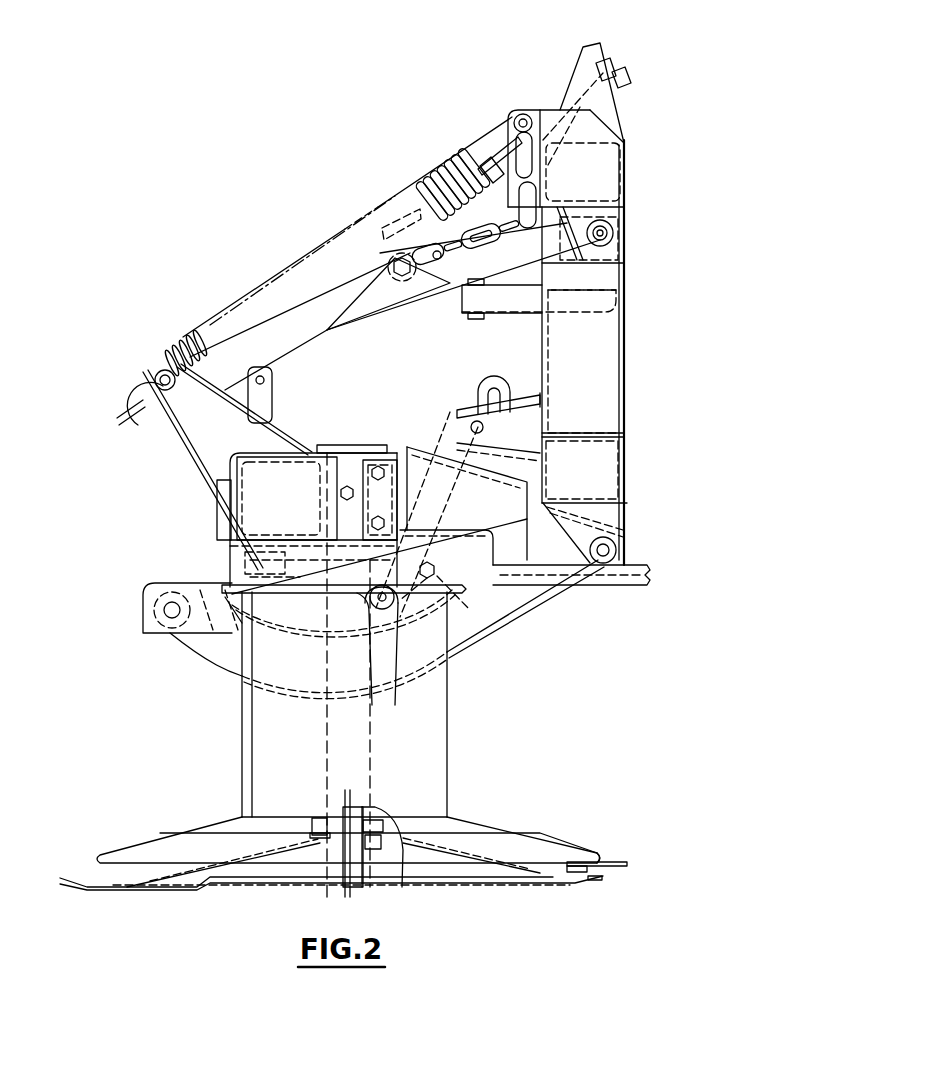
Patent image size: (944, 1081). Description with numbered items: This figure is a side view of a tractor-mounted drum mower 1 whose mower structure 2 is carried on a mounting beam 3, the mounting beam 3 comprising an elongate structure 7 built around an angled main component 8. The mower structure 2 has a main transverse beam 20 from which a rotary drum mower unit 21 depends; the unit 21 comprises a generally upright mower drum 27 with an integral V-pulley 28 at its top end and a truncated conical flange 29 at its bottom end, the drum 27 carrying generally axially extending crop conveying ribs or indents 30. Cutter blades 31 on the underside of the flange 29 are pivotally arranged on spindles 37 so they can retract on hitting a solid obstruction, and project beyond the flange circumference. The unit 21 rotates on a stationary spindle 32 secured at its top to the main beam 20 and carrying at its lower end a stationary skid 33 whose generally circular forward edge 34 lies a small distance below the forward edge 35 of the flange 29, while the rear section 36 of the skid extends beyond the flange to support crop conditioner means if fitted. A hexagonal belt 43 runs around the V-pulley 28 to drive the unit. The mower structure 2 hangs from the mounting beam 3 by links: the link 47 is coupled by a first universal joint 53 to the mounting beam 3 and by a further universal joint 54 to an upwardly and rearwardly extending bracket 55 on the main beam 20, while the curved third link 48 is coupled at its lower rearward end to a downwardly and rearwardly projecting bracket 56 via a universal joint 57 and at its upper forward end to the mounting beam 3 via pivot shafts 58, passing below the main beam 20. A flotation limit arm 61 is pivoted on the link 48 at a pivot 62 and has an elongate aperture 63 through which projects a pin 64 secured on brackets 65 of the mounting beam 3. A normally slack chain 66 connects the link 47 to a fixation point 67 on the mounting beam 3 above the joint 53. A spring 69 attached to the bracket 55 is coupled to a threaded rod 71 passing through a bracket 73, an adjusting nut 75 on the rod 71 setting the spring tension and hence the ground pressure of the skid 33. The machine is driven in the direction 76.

The drum mower 1 is at (271, 238).
The mower structure 2 is at (203, 780).
The mounting beam 3 is at (648, 343).
The elongate structure 7 is at (645, 239).
The angled main component 8 is at (625, 365).
The main transverse beam 20 is at (285, 452).
The rotary drum mower unit 21 is at (468, 736).
The mower drum 27 is at (449, 702).
The V-pulley 28 is at (438, 570).
The truncated conical flange 29 is at (560, 846).
The crop conveying ribs or indents 30 is at (240, 727).
The cutter blades 31 is at (622, 866).
The stationary spindle 32 is at (382, 768).
The stationary skid 33 is at (470, 888).
The forward edge of skid 34 is at (600, 882).
The forward edge of flange 35 is at (605, 856).
The rear section of skid 36 is at (86, 893).
The spindle 37 is at (560, 878).
The hexagonal belt 43 is at (478, 585).
The link 47 is at (363, 332).
The third link 48 is at (480, 640).
The first universal joint 53 is at (614, 238).
The further universal joint 54 is at (160, 370).
The bracket 55 is at (190, 462).
The bracket 56 is at (143, 628).
The universal joint 57 is at (195, 632).
The pivot shafts 58 is at (610, 565).
The flotation limit arm 61 is at (460, 498).
The pivot 62 is at (384, 680).
The elongate aperture 63 is at (478, 395).
The pin 64 is at (458, 400).
The brackets 65 is at (527, 396).
The chain 66 is at (458, 238).
The fixation point 67 is at (524, 112).
The spring 69 is at (455, 155).
The threaded rod 71 is at (500, 147).
The bracket 73 is at (612, 62).
The adjusting nut 75 is at (628, 82).
The direction 76 is at (650, 690).